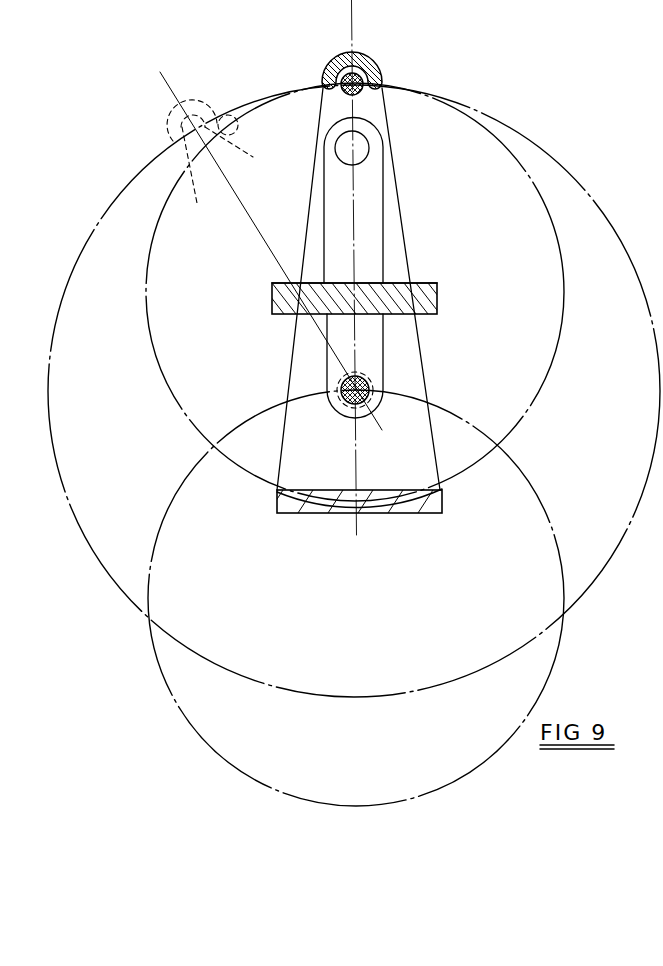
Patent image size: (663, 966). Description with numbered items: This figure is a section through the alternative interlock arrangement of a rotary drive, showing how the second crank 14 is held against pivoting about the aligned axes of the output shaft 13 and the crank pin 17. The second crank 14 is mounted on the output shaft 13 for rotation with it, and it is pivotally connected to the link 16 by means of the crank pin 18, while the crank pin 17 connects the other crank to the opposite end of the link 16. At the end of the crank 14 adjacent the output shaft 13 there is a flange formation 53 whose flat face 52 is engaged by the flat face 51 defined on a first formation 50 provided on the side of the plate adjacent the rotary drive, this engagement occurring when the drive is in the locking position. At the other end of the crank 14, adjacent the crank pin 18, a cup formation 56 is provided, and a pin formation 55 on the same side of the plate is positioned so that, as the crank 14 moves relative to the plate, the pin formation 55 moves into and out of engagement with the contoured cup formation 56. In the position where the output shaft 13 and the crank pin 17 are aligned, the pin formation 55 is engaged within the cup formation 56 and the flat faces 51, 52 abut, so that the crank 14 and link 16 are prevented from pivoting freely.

The output shaft 13 is at (339, 416).
The second crank 14 is at (413, 383).
The link 16 is at (380, 343).
The crank pin 17 is at (341, 382).
The crank pin 18 is at (362, 150).
The first formation 50 is at (425, 300).
The flat face 51 is at (424, 282).
The flat face 52 is at (397, 487).
The flange formation 53 is at (420, 513).
The pin formation 55 is at (341, 88).
The cup formation 56 is at (379, 74).